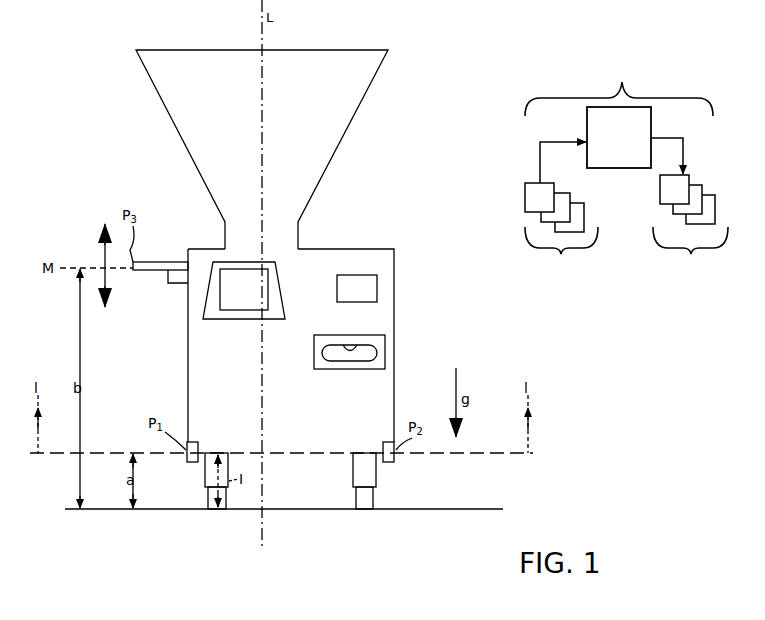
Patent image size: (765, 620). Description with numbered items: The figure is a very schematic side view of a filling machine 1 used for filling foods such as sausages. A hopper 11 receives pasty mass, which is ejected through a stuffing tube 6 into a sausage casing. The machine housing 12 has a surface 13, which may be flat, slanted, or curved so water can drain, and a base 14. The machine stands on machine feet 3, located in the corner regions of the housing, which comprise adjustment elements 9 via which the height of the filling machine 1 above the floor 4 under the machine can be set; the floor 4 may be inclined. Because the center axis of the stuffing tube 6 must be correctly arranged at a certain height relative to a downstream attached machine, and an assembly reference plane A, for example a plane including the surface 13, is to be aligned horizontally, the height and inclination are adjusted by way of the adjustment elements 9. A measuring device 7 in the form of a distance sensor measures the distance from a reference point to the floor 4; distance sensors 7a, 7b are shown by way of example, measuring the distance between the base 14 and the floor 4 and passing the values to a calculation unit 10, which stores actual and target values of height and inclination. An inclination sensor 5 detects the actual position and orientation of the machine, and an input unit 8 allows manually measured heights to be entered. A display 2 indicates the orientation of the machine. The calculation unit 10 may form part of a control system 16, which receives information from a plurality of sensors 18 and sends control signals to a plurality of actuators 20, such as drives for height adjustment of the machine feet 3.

The filling machine 1 is at (492, 86).
The display 2 is at (205, 320).
The machine feet 3 is at (202, 480).
The floor 4 is at (166, 512).
The inclination sensor 5 is at (389, 350).
The stuffing tube 6 is at (148, 273).
The measuring device 7 is at (176, 285).
The distance sensor 7a is at (196, 443).
The distance sensor 7b is at (385, 443).
The input unit 8 is at (245, 313).
The adjustment elements 9 is at (378, 490).
The calculation unit 10 is at (377, 288).
The hopper 11 is at (353, 112).
The machine housing 12 is at (398, 384).
The surface 13 is at (352, 249).
The base 14 is at (314, 456).
The control system 16 is at (628, 169).
The sensors 18 is at (561, 242).
The actuators 20 is at (690, 238).
The assembly reference plane A is at (378, 249).